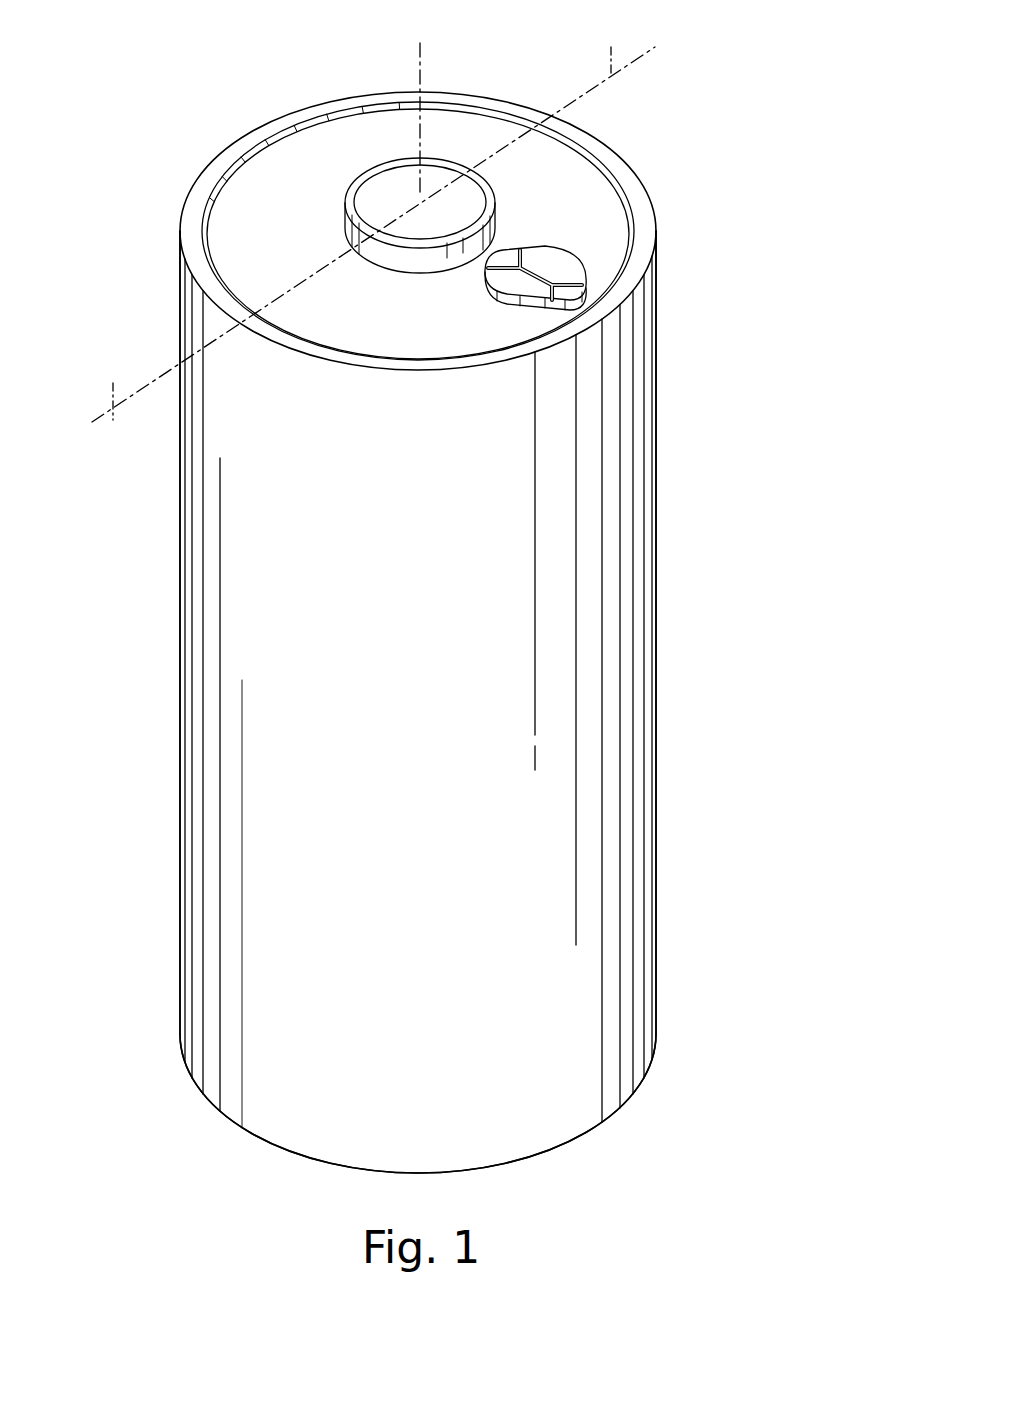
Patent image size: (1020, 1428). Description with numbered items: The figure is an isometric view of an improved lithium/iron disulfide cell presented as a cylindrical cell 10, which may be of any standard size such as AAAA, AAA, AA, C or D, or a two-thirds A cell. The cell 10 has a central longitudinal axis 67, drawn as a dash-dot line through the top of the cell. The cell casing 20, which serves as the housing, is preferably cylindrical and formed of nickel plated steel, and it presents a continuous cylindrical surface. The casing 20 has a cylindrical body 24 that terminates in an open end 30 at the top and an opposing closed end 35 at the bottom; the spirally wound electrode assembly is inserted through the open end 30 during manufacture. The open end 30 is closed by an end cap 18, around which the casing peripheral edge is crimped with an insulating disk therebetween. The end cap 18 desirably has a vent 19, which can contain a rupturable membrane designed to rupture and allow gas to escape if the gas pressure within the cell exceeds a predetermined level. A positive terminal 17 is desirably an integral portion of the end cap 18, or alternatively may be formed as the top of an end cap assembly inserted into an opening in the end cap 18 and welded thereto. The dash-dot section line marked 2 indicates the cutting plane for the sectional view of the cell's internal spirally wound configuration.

The cylindrical cell 10 is at (146, 625).
The positive terminal 17 is at (373, 172).
The end cap 18 is at (620, 233).
The vent 19 is at (518, 281).
The cell casing 20 is at (666, 517).
The cylindrical body 24 is at (658, 433).
The open end 30 is at (598, 192).
The closed end 35 is at (250, 1135).
The central longitudinal axis 67 is at (420, 77).
The section line 2 is at (576, 55).